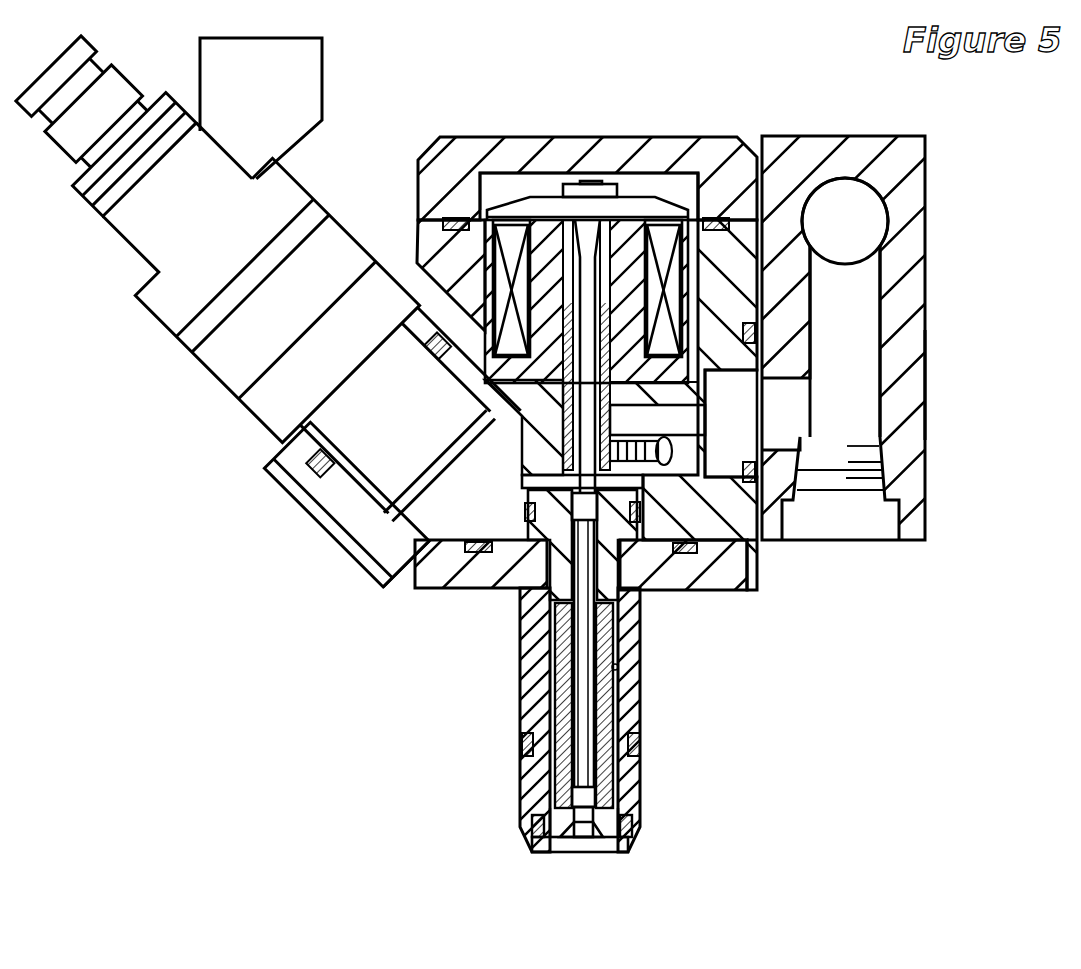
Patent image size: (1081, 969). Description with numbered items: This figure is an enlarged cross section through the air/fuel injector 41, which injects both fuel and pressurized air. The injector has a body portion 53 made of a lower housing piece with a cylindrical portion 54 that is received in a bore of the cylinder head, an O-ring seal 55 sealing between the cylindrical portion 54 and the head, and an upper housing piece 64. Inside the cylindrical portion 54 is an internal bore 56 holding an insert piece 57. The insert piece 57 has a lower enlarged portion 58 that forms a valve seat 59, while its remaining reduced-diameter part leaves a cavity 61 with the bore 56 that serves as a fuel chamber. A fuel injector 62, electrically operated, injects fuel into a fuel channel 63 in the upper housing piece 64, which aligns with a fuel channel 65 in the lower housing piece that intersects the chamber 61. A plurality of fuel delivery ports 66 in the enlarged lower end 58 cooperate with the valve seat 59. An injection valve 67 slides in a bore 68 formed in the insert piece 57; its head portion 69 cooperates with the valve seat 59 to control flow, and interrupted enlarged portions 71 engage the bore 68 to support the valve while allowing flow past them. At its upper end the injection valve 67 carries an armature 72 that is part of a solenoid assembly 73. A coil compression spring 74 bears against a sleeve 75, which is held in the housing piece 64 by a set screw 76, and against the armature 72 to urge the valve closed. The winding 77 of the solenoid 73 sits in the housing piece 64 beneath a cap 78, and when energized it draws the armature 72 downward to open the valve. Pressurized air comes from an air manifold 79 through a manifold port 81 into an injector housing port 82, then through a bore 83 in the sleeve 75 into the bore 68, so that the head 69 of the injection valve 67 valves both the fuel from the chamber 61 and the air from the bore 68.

The air/fuel injector 41 is at (928, 207).
The body portion 53 is at (764, 563).
The cylindrical portion 54 is at (518, 687).
The O-ring seal 55 is at (518, 748).
The internal bore 56 is at (617, 664).
The insert piece 57 is at (603, 717).
The lower enlarged portion 58 is at (560, 840).
The valve seat 59 is at (591, 852).
The cavity 61 is at (613, 778).
The fuel injector 62 is at (260, 402).
The fuel channel 63 is at (403, 540).
The upper housing piece 64 is at (303, 497).
The fuel channel 65 is at (465, 588).
The fuel delivery ports 66 is at (572, 794).
The injection valve 67 is at (600, 622).
The bore 68 is at (658, 578).
The head portion 69 is at (578, 851).
The enlarged portions 71 is at (645, 512).
The armature 72 is at (628, 205).
The solenoid assembly 73 is at (478, 268).
The coil compression spring 74 is at (573, 310).
The sleeve 75 is at (490, 340).
The set screw 76 is at (673, 453).
The winding 77 is at (690, 182).
The cap 78 is at (470, 147).
The air manifold 79 is at (926, 388).
The manifold port 81 is at (790, 378).
The injector housing port 82 is at (718, 375).
The bore 83 is at (610, 425).